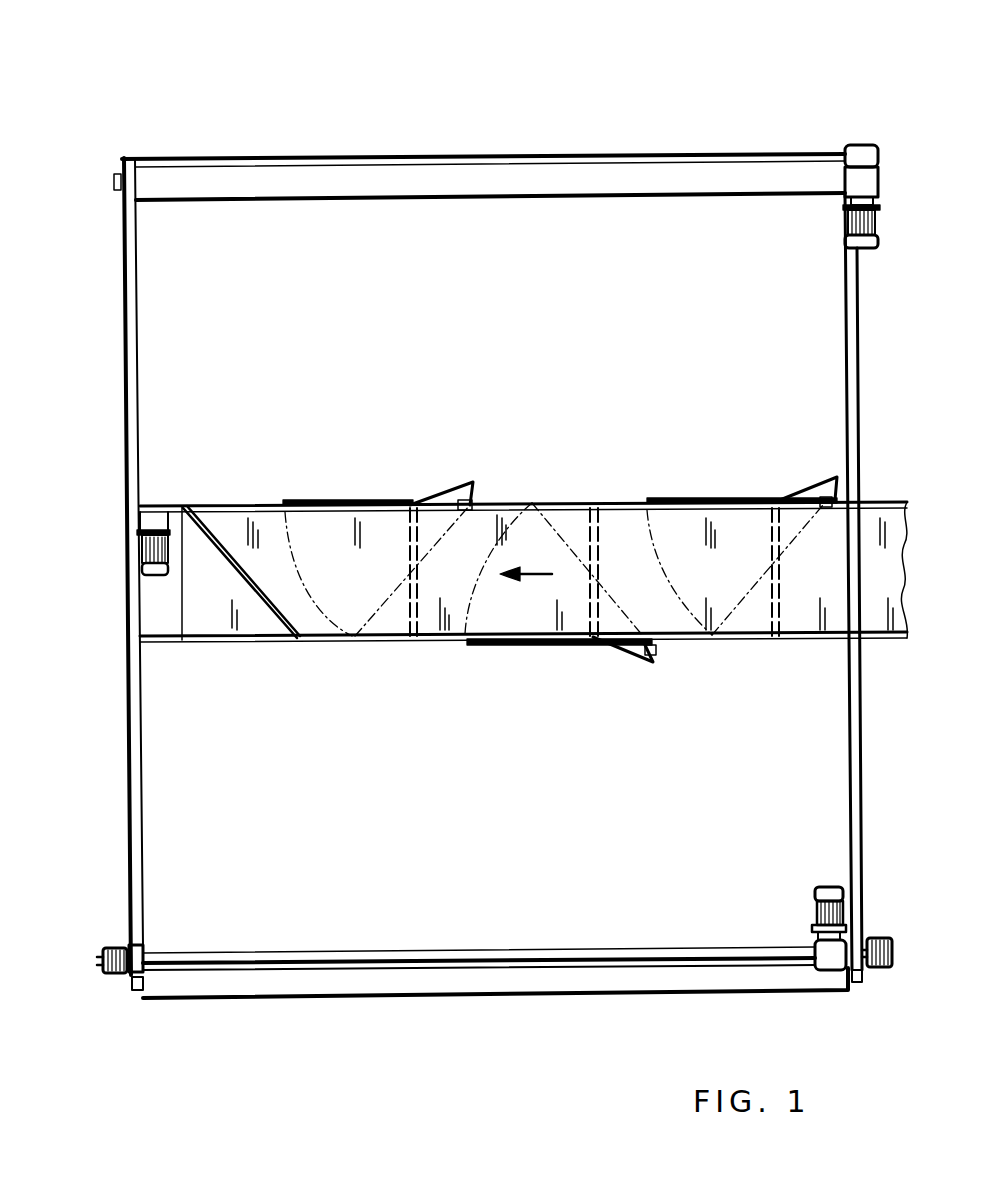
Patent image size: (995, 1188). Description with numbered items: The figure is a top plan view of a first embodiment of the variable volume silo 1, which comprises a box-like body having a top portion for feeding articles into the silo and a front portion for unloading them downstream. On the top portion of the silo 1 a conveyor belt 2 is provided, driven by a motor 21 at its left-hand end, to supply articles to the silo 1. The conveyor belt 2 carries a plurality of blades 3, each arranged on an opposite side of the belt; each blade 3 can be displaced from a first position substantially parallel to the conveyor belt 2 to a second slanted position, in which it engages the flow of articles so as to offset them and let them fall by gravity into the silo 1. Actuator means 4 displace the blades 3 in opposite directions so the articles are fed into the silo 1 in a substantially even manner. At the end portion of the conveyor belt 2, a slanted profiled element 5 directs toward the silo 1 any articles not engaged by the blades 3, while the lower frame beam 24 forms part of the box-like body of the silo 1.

The variable volume silo 1 is at (360, 116).
The conveyor belt 2 is at (613, 542).
The blades 3 is at (343, 500).
The actuator means 4 is at (437, 500).
The slanted profiled element 5 is at (257, 598).
The motor 21 is at (140, 545).
The lower frame beam 24 is at (407, 922).